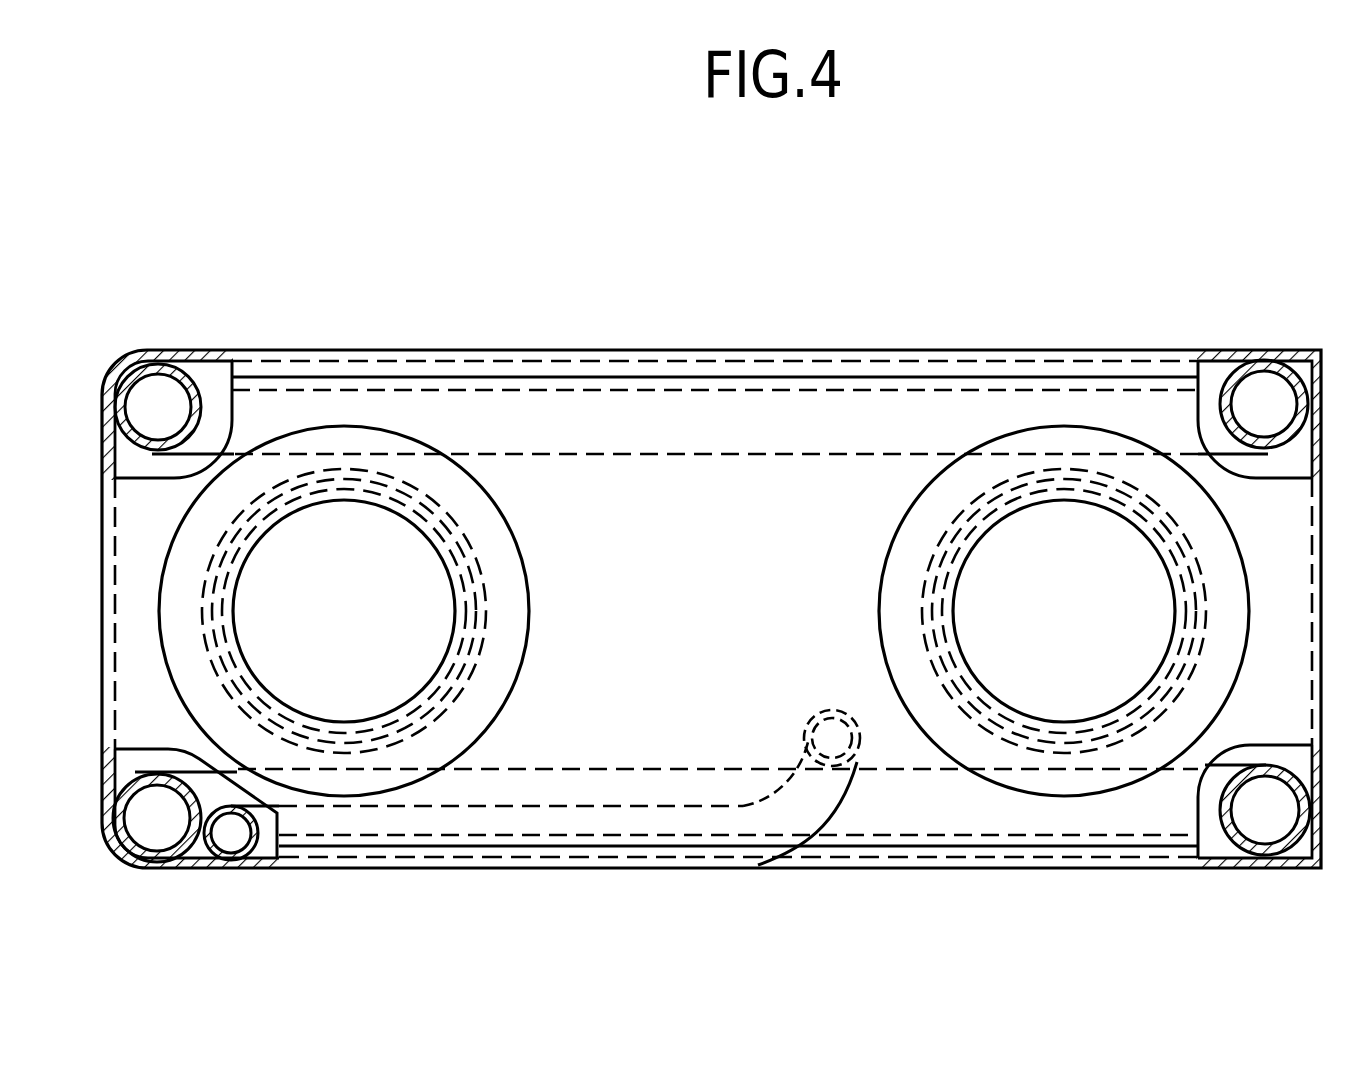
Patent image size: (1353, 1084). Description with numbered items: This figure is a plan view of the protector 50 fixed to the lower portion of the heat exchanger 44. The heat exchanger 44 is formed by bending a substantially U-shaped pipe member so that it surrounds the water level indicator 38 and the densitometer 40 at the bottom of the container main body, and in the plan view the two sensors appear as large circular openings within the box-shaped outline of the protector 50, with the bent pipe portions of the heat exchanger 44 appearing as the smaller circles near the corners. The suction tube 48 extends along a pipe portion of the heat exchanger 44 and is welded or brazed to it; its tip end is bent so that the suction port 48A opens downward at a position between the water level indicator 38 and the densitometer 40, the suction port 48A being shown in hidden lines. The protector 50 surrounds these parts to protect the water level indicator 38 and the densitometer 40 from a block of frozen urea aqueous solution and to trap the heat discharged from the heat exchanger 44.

The water level indicator 38 is at (379, 553).
The densitometer 40 is at (1053, 531).
The heat exchanger 44 is at (149, 820).
The suction tube 48 is at (235, 832).
The suction port 48A is at (841, 757).
The protector 50 is at (834, 349).